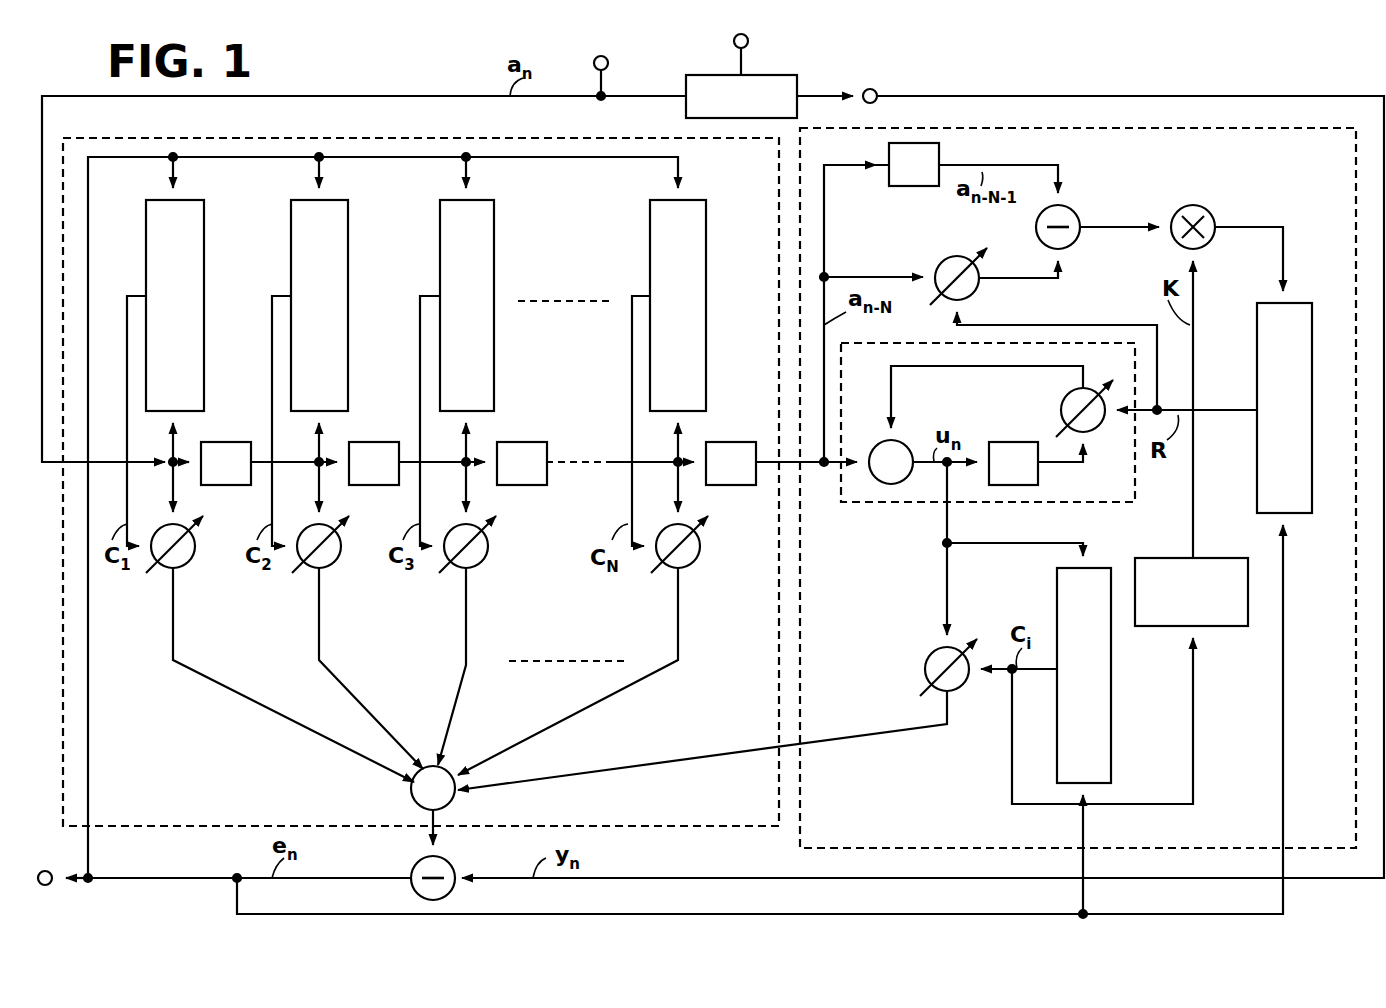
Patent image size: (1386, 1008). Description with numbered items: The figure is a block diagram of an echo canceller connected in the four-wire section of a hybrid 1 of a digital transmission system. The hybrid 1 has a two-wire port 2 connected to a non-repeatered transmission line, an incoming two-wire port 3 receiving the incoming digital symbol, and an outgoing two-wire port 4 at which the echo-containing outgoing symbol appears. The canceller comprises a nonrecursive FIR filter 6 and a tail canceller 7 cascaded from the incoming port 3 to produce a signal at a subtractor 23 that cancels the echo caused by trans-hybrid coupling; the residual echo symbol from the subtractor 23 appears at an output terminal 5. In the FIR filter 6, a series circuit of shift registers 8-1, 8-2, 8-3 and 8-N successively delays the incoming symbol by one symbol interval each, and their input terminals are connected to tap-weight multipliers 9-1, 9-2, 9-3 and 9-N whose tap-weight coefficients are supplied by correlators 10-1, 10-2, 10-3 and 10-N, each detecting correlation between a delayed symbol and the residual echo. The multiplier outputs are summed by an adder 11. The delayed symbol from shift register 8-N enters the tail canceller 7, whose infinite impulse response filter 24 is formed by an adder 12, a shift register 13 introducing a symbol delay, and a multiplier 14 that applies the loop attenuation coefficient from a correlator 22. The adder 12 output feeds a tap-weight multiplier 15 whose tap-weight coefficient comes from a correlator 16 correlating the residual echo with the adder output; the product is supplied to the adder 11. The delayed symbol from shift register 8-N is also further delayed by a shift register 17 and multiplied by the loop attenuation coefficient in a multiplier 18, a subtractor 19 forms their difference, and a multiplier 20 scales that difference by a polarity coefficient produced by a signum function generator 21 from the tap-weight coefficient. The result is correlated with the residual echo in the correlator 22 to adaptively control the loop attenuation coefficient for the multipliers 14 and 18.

The hybrid 1 is at (778, 75).
The two-wire port 2 is at (733, 42).
The incoming two-wire port 3 is at (592, 62).
The outgoing two-wire port 4 is at (875, 89).
The output terminal 5 is at (43, 871).
The FIR filter 6 is at (421, 482).
The tail canceller 7 is at (1078, 488).
The shift register 8-1 is at (227, 442).
The shift register 8-2 is at (375, 442).
The shift register 8-3 is at (523, 442).
The shift register 8-N is at (732, 442).
The tap-weight multiplier 9-1 is at (185, 565).
The tap-weight multiplier 9-2 is at (332, 565).
The tap-weight multiplier 9-3 is at (479, 565).
The tap-weight multiplier 9-N is at (692, 565).
The correlator 10-1 is at (204, 237).
The correlator 10-2 is at (348, 237).
The correlator 10-3 is at (494, 237).
The correlator 10-N is at (706, 237).
The adder 11 is at (422, 768).
The adder 12 is at (876, 446).
The shift register 13 is at (1002, 442).
The multiplier 14 is at (1062, 398).
The tap-weight multiplier 15 is at (960, 685).
The correlator 16 is at (1098, 568).
The shift register 17 is at (898, 186).
The multiplier 18 is at (952, 264).
The subtractor 19 is at (1074, 210).
The multiplier 20 is at (1184, 207).
The signum function generator 21 is at (1208, 558).
The correlator 22 is at (1297, 303).
The subtractor 23 is at (416, 866).
The infinite impulse response filter 24 is at (895, 503).